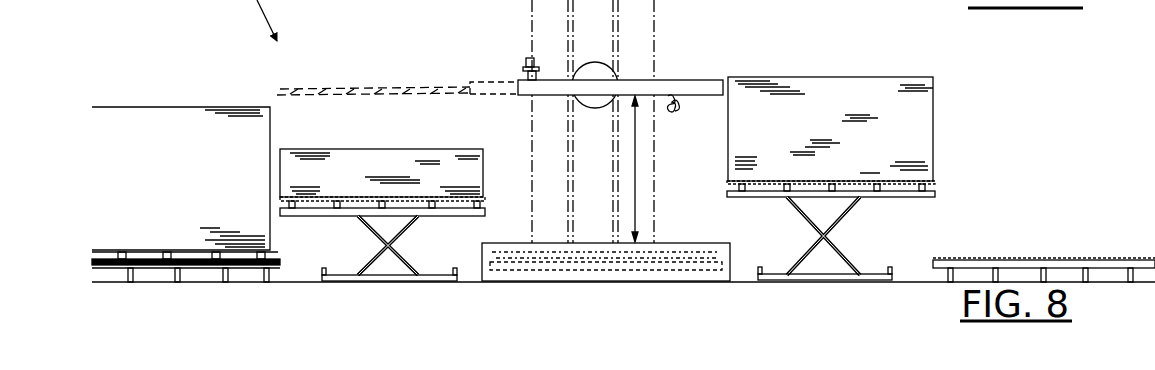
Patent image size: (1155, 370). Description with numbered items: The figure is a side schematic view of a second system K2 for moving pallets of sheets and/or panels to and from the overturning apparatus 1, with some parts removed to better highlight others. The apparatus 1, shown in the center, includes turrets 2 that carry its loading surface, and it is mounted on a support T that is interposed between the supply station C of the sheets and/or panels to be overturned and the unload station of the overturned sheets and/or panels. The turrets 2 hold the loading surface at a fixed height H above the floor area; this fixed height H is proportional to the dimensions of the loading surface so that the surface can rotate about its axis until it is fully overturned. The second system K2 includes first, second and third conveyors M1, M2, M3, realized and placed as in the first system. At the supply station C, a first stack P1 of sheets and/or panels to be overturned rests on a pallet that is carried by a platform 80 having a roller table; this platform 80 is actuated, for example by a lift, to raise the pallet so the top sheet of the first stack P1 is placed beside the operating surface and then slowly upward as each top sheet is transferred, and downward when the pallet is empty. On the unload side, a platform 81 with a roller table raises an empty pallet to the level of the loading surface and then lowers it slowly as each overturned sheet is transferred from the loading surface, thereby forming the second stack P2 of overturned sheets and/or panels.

The apparatus 1 is at (678, 58).
The turrets 2 is at (548, 10).
The supply station C is at (956, 61).
The second system K2 is at (392, 62).
The first stack P1 is at (937, 121).
The second stack P2 is at (488, 163).
The fixed height H is at (640, 169).
The platform 80 is at (931, 197).
The platform 81 is at (317, 213).
The first conveyor M1 is at (1104, 272).
The second conveyor M2 is at (155, 273).
The third conveyor M3 is at (544, 262).
The support T is at (709, 271).